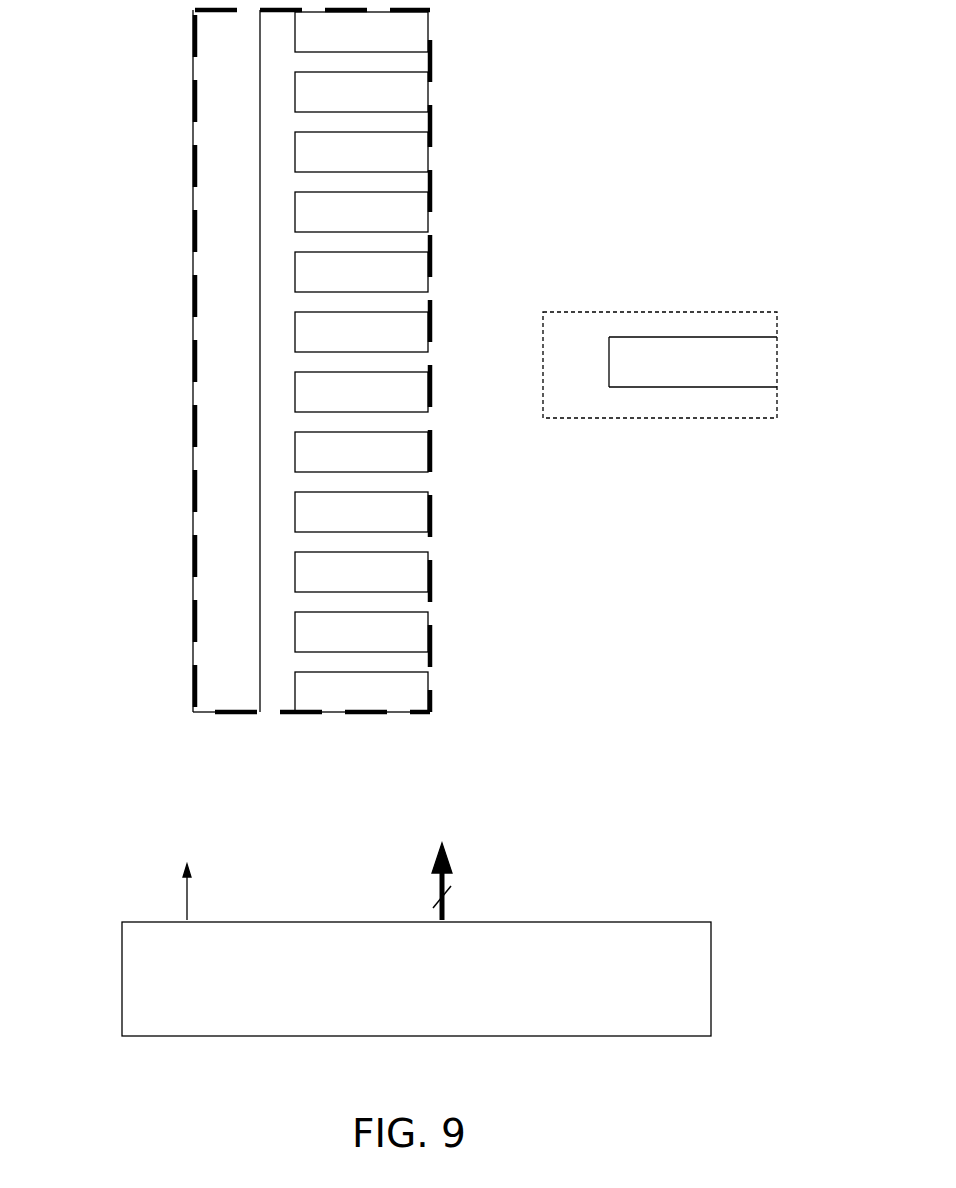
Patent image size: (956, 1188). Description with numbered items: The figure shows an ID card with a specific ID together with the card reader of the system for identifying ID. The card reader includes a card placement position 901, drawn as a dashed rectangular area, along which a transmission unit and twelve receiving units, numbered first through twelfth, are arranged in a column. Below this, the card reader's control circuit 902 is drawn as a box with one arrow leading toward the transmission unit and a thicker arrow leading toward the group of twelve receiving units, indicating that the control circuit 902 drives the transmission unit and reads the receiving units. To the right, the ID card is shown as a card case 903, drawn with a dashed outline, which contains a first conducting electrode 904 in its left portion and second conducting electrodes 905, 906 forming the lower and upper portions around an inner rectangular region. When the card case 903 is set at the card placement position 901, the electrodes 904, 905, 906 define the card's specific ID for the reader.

The card placement position 901 is at (193, 222).
The control circuit 902 is at (712, 970).
The card case 903 is at (777, 355).
The first conducting electrode 904 is at (568, 348).
The second conducting electrode 905 is at (693, 402).
The second conducting electrode 906 is at (693, 326).